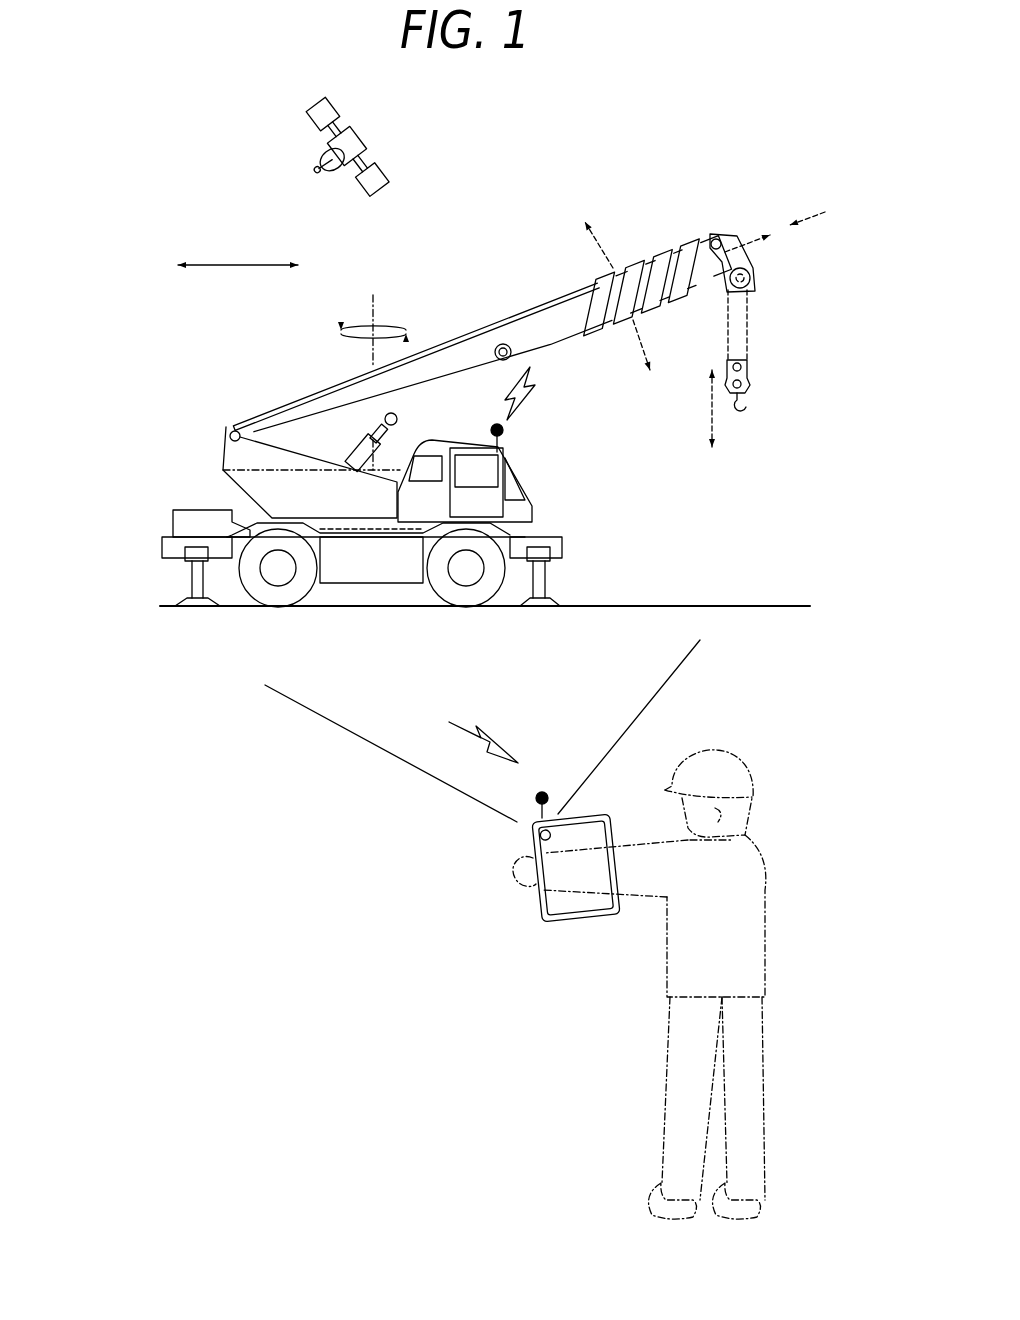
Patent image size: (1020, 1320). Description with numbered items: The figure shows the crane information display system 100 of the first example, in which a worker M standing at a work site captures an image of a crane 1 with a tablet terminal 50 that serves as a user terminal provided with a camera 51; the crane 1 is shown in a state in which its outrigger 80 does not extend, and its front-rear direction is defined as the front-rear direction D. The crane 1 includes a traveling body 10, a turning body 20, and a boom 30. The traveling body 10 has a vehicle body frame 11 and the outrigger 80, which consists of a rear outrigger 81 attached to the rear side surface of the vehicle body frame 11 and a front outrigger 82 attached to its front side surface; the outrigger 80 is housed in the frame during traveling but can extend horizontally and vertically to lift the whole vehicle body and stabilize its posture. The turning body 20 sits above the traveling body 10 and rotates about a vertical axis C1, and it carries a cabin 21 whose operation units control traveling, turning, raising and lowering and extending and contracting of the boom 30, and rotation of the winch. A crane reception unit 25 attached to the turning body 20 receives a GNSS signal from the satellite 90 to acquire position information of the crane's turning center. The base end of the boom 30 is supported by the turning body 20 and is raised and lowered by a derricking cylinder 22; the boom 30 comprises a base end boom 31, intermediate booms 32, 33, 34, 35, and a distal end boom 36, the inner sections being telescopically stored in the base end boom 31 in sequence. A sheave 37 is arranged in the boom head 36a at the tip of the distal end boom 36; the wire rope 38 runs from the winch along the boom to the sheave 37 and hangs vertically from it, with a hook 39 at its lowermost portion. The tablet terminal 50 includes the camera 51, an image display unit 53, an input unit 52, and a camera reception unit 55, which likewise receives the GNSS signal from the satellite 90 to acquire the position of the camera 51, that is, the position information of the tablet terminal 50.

The crane 1 is at (495, 230).
The traveling body 10 is at (369, 595).
The vehicle body frame 11 is at (380, 577).
The turning body 20 is at (215, 448).
The cabin 21 is at (524, 480).
The derricking cylinder 22 is at (378, 457).
The crane reception unit 25 is at (508, 433).
The boom 30 is at (535, 355).
The base end boom 31 is at (422, 373).
The intermediate boom 32 is at (604, 302).
The intermediate boom 33 is at (633, 290).
The intermediate boom 34 is at (661, 279).
The intermediate boom 35 is at (693, 267).
The distal end boom 36 is at (721, 241).
The boom head 36a is at (745, 262).
The sheave 37 is at (752, 279).
The wire rope 38 is at (500, 322).
The hook 39 is at (750, 382).
The outrigger 80 is at (389, 609).
The rear outrigger 81 is at (222, 607).
The front outrigger 82 is at (558, 587).
The satellite 90 is at (366, 133).
The crane information display system 100 is at (280, 792).
The tablet terminal 50 is at (601, 807).
The camera 51 is at (545, 835).
The input unit 52 is at (565, 850).
The image display unit 53 is at (576, 868).
The camera reception unit 55 is at (542, 790).
The worker M is at (720, 930).
The vertical axis C1 is at (357, 304).
The front-rear direction D is at (241, 260).